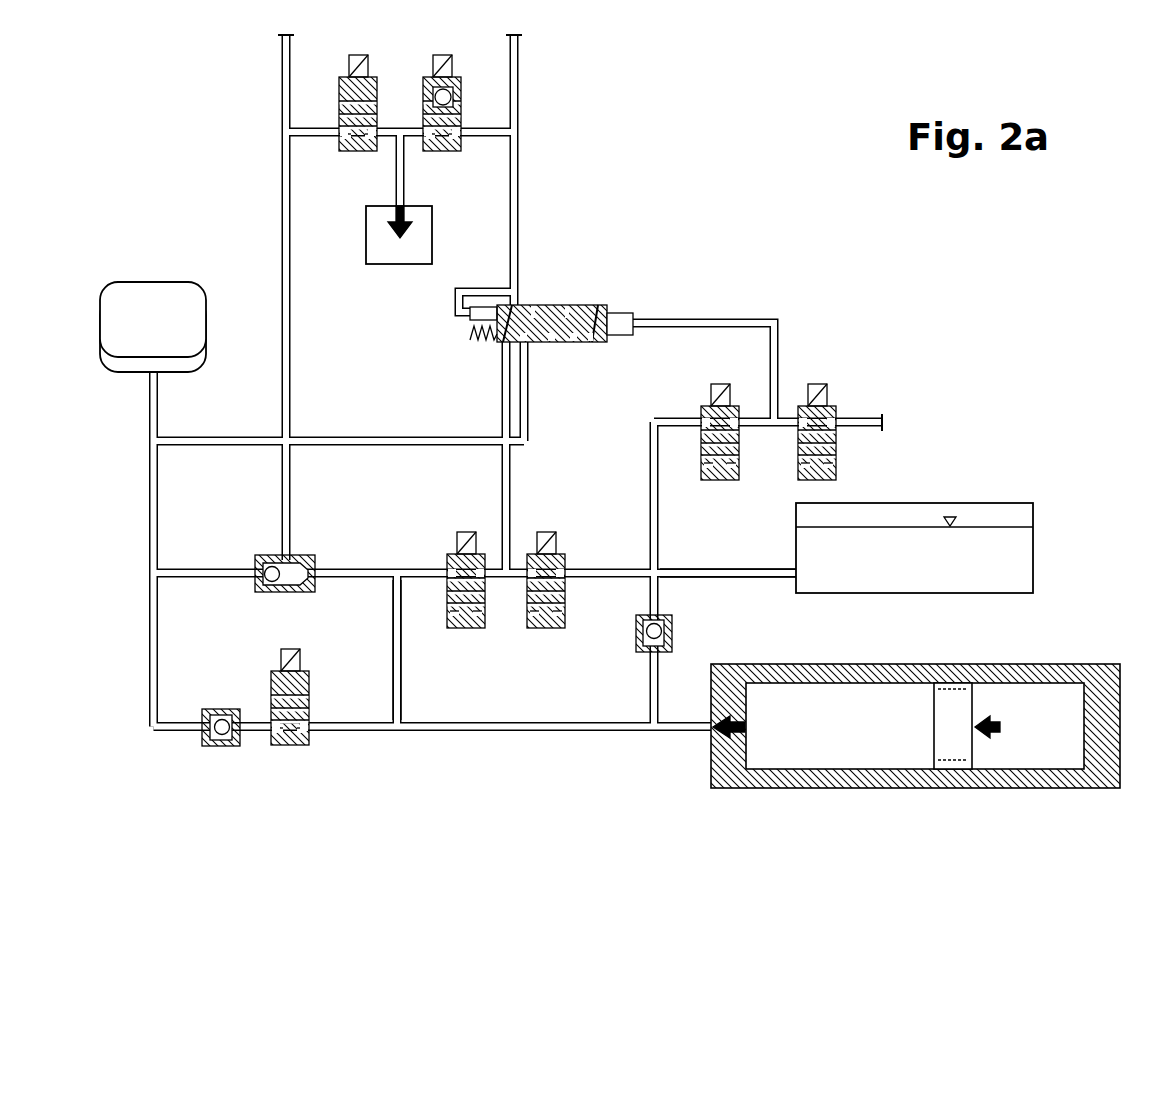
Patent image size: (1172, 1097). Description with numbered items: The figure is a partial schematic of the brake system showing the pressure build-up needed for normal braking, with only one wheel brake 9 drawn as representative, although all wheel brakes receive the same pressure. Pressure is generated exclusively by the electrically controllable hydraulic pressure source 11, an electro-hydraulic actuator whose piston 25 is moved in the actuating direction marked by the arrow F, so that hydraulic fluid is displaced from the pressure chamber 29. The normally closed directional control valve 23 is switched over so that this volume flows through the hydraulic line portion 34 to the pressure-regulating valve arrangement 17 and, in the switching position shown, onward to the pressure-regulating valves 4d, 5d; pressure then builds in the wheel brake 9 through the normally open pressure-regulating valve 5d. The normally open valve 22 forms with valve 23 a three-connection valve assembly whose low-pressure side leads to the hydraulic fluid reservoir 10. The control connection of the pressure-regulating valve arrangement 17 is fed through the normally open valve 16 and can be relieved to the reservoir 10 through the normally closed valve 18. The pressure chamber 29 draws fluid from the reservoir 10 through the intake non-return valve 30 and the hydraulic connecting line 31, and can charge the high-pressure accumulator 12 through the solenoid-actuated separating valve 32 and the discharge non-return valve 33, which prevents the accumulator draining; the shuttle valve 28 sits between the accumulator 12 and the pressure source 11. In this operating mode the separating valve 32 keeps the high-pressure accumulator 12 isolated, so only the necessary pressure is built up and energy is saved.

The high-pressure accumulator 12 is at (153, 305).
The pressure-regulating valve 4d is at (350, 152).
The pressure-regulating valve 5d is at (455, 152).
The wheel brake 9 is at (404, 258).
The pressure-regulating valve arrangement 17 is at (579, 302).
The normally closed 2/2-way directional control valve 18 is at (718, 480).
The normally open 2/2-way directional control valve 16 is at (836, 446).
The hydraulic connecting line 31 is at (765, 568).
The hydraulic fluid reservoir 10 is at (1005, 557).
The shuttle valve 28 is at (275, 558).
The hydraulic line portion 34 is at (390, 632).
The normally closed 2/2-way directional control valve 23 is at (465, 630).
The normally open 2/2-way directional control valve 22 is at (545, 630).
The intake non-return valve 30 is at (674, 633).
The discharge non-return valve 33 is at (217, 748).
The separating valve 32 is at (289, 748).
The hydraulic pressure source 11 is at (941, 756).
The pressure chamber 29 is at (832, 757).
The piston 25 is at (956, 757).